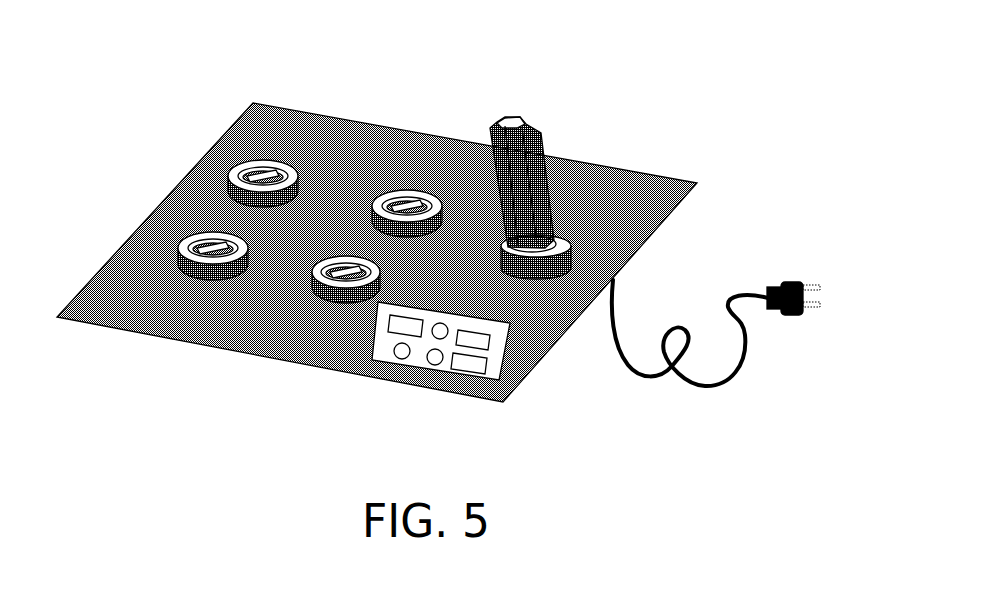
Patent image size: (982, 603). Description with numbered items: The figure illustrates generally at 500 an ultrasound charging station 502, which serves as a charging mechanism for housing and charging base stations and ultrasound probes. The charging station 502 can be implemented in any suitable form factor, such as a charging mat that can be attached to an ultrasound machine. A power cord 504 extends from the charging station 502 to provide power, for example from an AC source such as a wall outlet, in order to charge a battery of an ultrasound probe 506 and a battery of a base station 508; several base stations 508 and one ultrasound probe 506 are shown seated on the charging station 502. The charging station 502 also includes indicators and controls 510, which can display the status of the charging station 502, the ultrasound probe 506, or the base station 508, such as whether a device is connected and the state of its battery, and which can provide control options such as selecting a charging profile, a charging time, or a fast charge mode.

The ultrasound charging station illustration 500 is at (408, 51).
The ultrasound charging station 502 is at (148, 220).
The power cord 504 is at (758, 293).
The ultrasound probe 506 is at (497, 125).
The base station 508 is at (240, 167).
The indicators and controls 510 is at (432, 370).